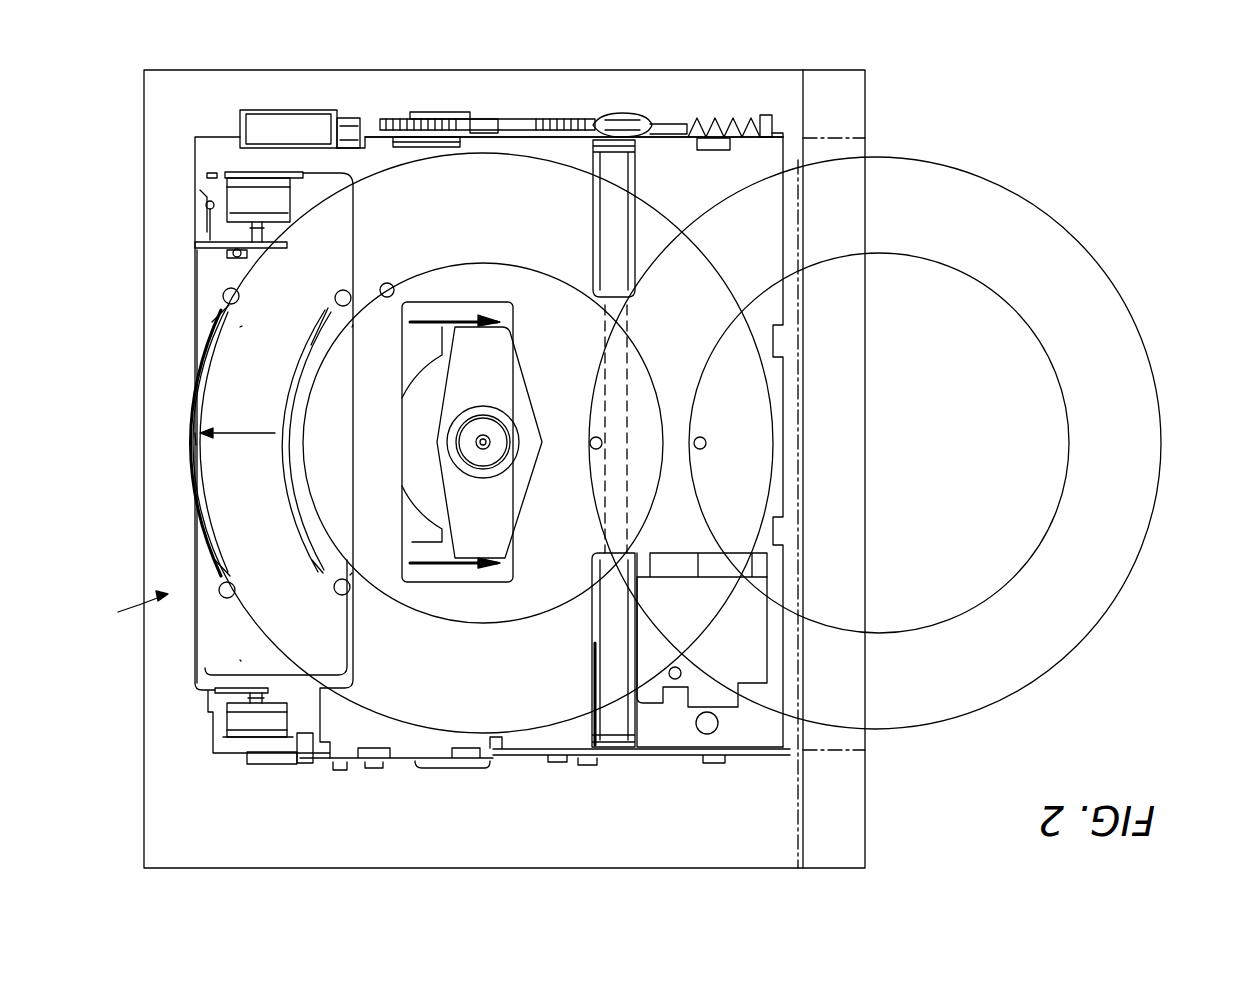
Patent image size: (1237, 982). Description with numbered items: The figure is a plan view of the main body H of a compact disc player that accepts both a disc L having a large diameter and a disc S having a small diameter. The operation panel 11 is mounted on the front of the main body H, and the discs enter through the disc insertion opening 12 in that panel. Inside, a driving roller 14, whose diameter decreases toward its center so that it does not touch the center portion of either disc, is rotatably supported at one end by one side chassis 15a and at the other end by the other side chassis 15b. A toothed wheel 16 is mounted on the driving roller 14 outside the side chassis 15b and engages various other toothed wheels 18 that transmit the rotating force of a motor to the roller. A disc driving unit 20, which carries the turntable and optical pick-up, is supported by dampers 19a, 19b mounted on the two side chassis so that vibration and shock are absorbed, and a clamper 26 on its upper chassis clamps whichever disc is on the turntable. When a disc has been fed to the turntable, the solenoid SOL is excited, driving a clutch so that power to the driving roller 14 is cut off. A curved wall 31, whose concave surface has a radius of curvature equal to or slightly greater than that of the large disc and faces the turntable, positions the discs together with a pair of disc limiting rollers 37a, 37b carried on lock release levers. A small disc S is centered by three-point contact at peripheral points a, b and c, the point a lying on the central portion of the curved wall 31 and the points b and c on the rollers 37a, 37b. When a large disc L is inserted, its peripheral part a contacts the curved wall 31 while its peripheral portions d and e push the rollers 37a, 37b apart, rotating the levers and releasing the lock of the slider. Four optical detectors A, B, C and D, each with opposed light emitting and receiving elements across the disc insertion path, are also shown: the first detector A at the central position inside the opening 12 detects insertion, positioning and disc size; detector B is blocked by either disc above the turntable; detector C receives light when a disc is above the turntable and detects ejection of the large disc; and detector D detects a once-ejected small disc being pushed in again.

The operation panel 11 is at (823, 870).
The disc insertion opening 12 is at (853, 737).
The driving roller 14 is at (613, 723).
The side chassis 15a is at (745, 757).
The side chassis 15b is at (518, 140).
The toothed wheel 16 is at (605, 117).
The toothed wheels 18 is at (495, 113).
The damper 19a is at (233, 721).
The damper 19b is at (240, 197).
The disc driving unit 20 is at (193, 553).
The clamper 26 is at (428, 495).
The curved wall 31 is at (192, 450).
The disc limiting roller 37a is at (221, 598).
The disc limiting roller 37b is at (222, 300).
The solenoid SOL is at (283, 117).
The first optical detector A is at (706, 441).
The second optical detector B is at (384, 283).
The third optical detector C is at (675, 680).
The fourth optical detector D is at (590, 443).
The main body H is at (131, 610).
The disc having large diameter L is at (672, 221).
The disc having small diameter S is at (548, 613).
The peripheral part of disc a is at (195, 433).
The peripheral portion of disc b is at (352, 573).
The peripheral portion of disc c is at (353, 325).
The peripheral portion of disc d is at (243, 648).
The peripheral portion of disc e is at (240, 327).